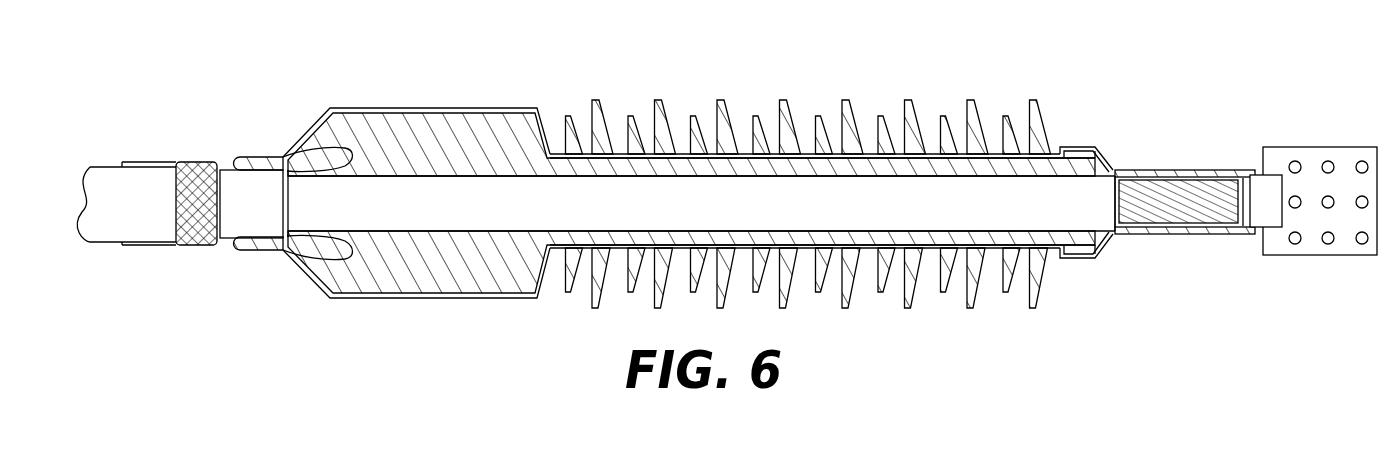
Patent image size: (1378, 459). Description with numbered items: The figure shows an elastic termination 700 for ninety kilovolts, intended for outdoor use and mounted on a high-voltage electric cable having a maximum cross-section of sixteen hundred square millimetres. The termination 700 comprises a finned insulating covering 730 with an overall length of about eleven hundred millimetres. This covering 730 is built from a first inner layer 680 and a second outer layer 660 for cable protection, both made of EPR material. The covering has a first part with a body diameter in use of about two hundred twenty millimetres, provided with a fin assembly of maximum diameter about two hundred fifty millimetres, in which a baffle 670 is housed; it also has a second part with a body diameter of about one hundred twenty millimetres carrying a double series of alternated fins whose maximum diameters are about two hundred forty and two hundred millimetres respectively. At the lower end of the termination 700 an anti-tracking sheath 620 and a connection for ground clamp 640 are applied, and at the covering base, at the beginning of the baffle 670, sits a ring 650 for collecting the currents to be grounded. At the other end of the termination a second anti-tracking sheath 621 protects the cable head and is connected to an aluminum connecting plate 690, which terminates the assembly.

The anti-tracking sheath 620 is at (158, 247).
The second anti-tracking sheath 621 is at (1107, 160).
The connection for ground clamp 640 is at (195, 168).
The ring 650 is at (227, 248).
The second outer layer 660 is at (487, 298).
The baffle 670 is at (340, 260).
The first inner layer 680 is at (413, 286).
The aluminum connecting plate 690 is at (1328, 153).
The elastic termination 700 is at (1212, 125).
The covering 730 is at (860, 298).